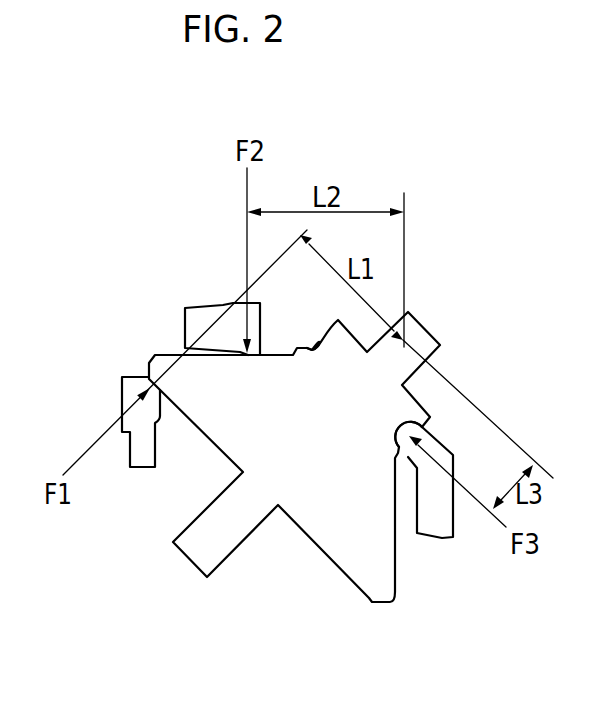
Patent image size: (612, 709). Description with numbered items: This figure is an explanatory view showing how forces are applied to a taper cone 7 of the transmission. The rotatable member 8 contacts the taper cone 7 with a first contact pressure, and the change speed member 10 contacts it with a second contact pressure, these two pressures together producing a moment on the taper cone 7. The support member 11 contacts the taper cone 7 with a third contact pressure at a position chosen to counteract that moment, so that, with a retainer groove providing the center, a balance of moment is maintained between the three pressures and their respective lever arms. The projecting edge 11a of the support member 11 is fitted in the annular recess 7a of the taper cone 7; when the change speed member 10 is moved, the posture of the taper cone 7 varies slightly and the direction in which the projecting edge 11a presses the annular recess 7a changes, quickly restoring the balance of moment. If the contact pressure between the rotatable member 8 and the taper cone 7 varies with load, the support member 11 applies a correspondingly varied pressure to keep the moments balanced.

The taper cone 7 is at (397, 583).
The annular recess 7a is at (310, 342).
The rotatable member 8 is at (155, 443).
The change speed member 10 is at (184, 318).
The support member 11 is at (448, 513).
The projecting edge 11a is at (400, 432).